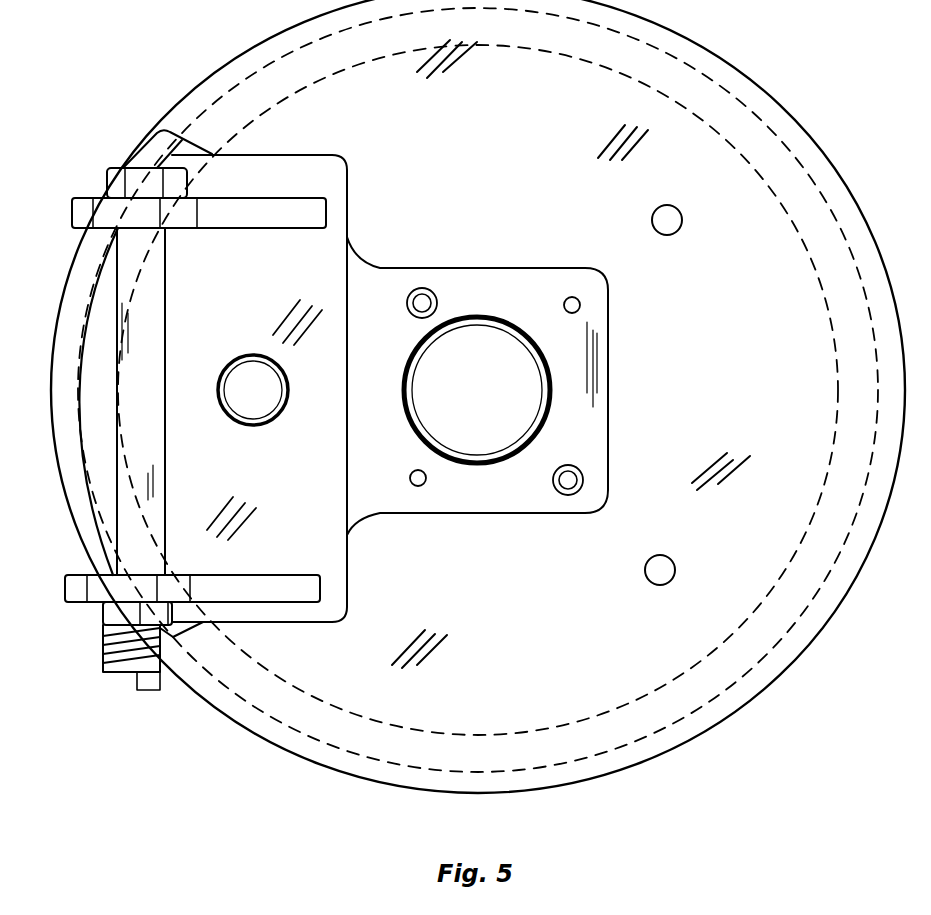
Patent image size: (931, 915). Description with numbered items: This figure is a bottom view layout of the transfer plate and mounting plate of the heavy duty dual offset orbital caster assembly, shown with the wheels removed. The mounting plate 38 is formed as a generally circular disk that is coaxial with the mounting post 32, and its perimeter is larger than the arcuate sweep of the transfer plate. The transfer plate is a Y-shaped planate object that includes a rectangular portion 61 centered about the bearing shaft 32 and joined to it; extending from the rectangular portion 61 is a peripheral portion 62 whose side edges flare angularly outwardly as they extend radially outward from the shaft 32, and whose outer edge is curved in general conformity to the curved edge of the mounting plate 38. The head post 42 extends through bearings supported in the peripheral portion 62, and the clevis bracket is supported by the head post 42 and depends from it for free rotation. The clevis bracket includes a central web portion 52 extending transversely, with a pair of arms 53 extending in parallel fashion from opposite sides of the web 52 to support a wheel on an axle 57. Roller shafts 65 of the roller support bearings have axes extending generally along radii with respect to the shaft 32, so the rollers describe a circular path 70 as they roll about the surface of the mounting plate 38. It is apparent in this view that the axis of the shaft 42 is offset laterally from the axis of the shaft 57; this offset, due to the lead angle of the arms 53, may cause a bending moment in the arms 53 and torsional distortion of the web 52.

The mounting post 32 is at (477, 390).
The mounting plate 38 is at (478, 390).
The head post 42 is at (253, 390).
The central web portion 52 is at (259, 388).
The arms 53 is at (267, 197).
The axle 57 is at (143, 262).
The rectangular portion 61 is at (493, 283).
The peripheral portion 62 is at (95, 470).
The roller shafts 65 is at (150, 135).
The circular path 70 is at (690, 710).